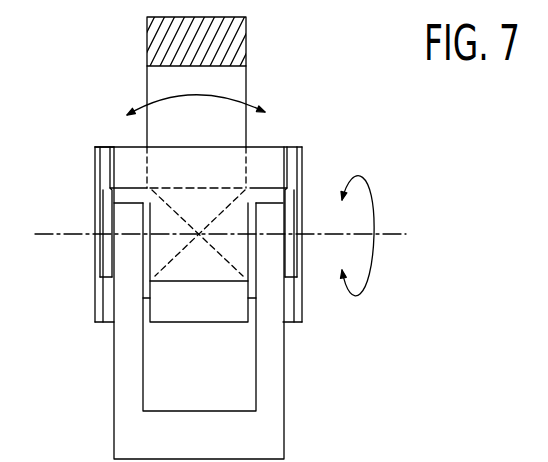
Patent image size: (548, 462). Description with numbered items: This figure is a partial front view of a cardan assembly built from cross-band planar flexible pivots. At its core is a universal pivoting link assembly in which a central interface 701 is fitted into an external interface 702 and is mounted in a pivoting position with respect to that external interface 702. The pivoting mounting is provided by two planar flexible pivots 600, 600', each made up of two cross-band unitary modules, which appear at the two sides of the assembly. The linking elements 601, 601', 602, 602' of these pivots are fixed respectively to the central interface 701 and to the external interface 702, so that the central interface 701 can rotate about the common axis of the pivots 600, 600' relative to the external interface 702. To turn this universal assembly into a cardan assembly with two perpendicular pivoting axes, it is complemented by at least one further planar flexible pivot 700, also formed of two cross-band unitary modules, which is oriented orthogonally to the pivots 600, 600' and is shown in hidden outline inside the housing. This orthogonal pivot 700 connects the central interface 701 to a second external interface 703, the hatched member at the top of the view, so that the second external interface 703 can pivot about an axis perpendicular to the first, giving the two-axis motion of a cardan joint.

The planar flexible pivot 600 is at (246, 111).
The planar flexible pivot 600' is at (66, 124).
The linking element 601 is at (349, 216).
The linking element 601' is at (62, 234).
The linking element 602 is at (320, 273).
The linking element 602' is at (83, 276).
The planar flexible pivot 700 is at (225, 247).
The central interface 701 is at (222, 153).
The external interface 702 is at (125, 434).
The second external interface 703 is at (147, 50).